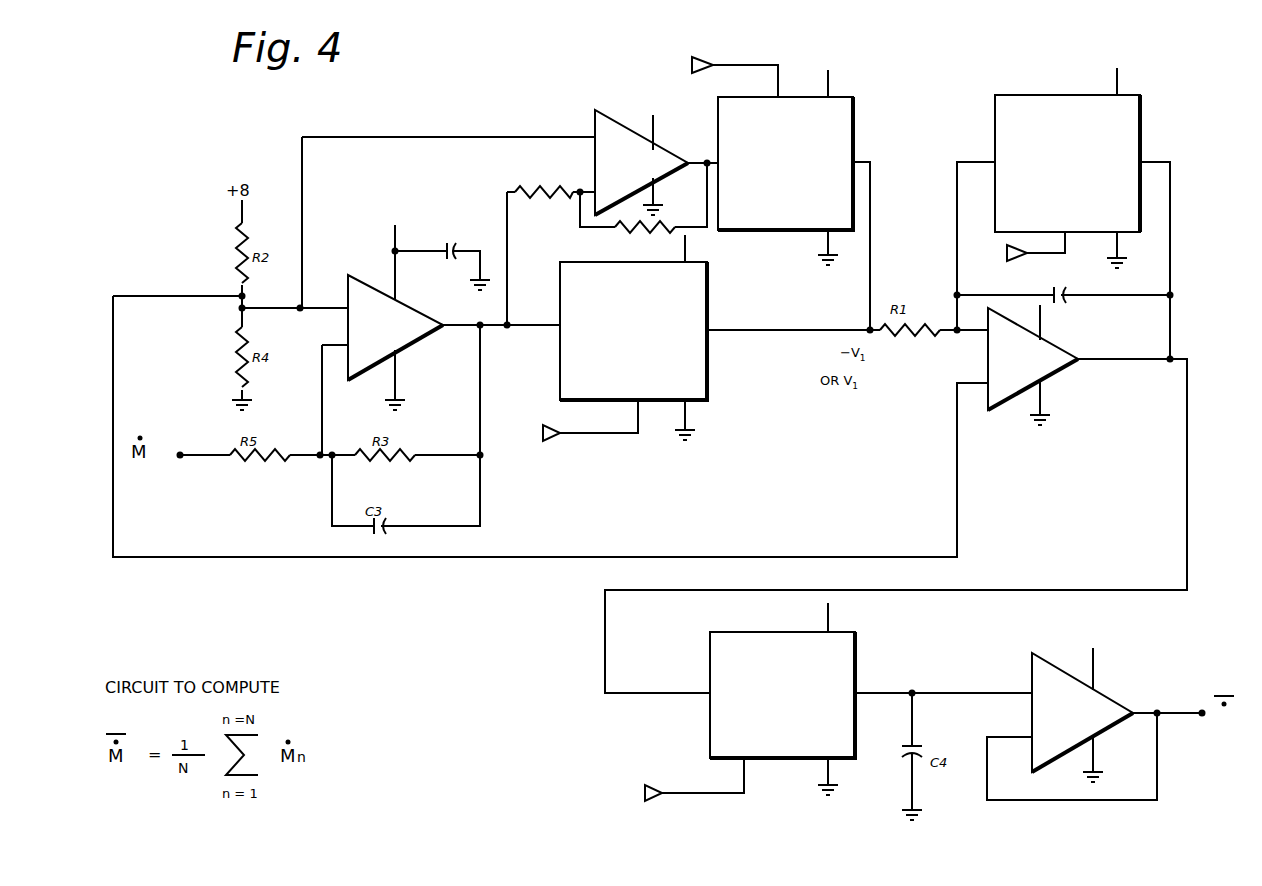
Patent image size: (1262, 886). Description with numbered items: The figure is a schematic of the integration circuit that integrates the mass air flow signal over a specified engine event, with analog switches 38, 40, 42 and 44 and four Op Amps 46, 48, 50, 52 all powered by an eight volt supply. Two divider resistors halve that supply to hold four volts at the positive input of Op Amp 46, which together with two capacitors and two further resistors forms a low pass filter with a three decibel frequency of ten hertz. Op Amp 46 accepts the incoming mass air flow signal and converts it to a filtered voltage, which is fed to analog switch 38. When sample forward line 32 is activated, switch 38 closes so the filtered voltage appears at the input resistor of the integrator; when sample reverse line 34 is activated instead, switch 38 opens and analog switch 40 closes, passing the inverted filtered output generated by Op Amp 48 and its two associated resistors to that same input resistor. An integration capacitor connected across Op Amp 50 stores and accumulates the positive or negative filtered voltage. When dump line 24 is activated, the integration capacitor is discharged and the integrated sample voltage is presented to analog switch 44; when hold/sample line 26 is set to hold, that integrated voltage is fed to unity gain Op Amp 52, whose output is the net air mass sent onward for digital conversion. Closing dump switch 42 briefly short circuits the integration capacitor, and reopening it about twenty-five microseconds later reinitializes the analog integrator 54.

The dump timing line 24 is at (1002, 262).
The hold/sample timing line 26 is at (750, 788).
The sample forward line 32 is at (572, 434).
The sample reverse line 34 is at (735, 70).
The analog switch 38 is at (707, 400).
The analog switch 40 is at (765, 232).
The dump switch 42 is at (1141, 136).
The analog switch 44 is at (718, 632).
The Op Amp 46 is at (408, 350).
The Op Amp 48 is at (674, 156).
The Op Amp 50 is at (1050, 378).
The unity gain Op Amp 52 is at (1032, 656).
The analog integrator 54 is at (1203, 258).